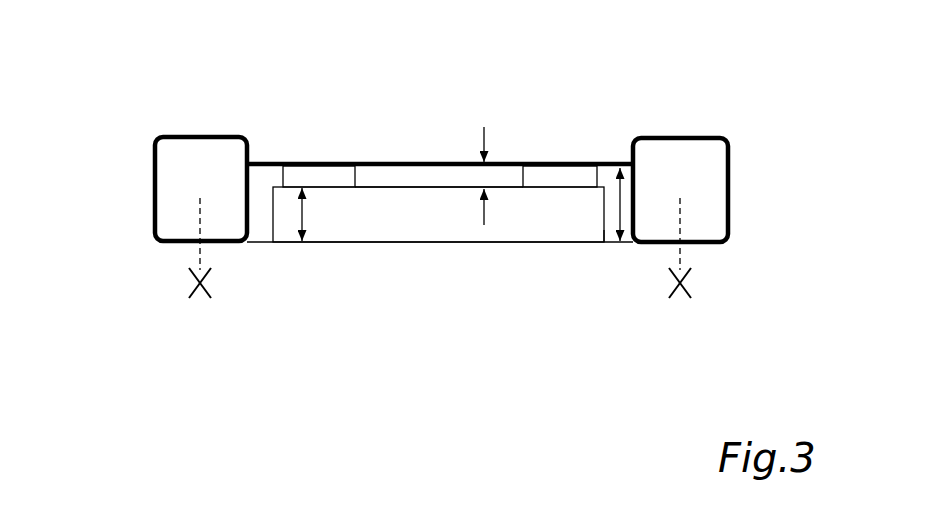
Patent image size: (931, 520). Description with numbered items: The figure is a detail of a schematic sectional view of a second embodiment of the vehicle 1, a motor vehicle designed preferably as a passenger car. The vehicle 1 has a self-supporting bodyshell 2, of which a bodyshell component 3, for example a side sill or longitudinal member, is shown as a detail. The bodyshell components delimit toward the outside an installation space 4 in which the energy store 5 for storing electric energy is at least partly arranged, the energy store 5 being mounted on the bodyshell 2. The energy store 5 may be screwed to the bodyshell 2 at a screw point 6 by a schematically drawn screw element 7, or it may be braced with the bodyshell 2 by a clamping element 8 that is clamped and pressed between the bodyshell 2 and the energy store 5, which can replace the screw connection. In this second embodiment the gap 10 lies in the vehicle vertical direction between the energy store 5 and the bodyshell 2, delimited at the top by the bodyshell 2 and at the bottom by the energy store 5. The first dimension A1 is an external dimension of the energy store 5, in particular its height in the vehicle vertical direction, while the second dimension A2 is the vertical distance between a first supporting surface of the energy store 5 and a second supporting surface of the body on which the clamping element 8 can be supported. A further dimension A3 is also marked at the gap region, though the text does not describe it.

The vehicle 1 is at (113, 85).
The bodyshell 2 is at (680, 160).
The bodyshell component 3 is at (445, 160).
The installation space 4 is at (610, 243).
The energy store 5 is at (445, 250).
The screw point 6 is at (192, 300).
The screw element 7 is at (197, 223).
The clamping element 8 is at (310, 170).
The gap 10 is at (387, 182).
The first dimension A1 is at (304, 217).
The second dimension A2 is at (618, 207).
The distance A3 is at (483, 175).